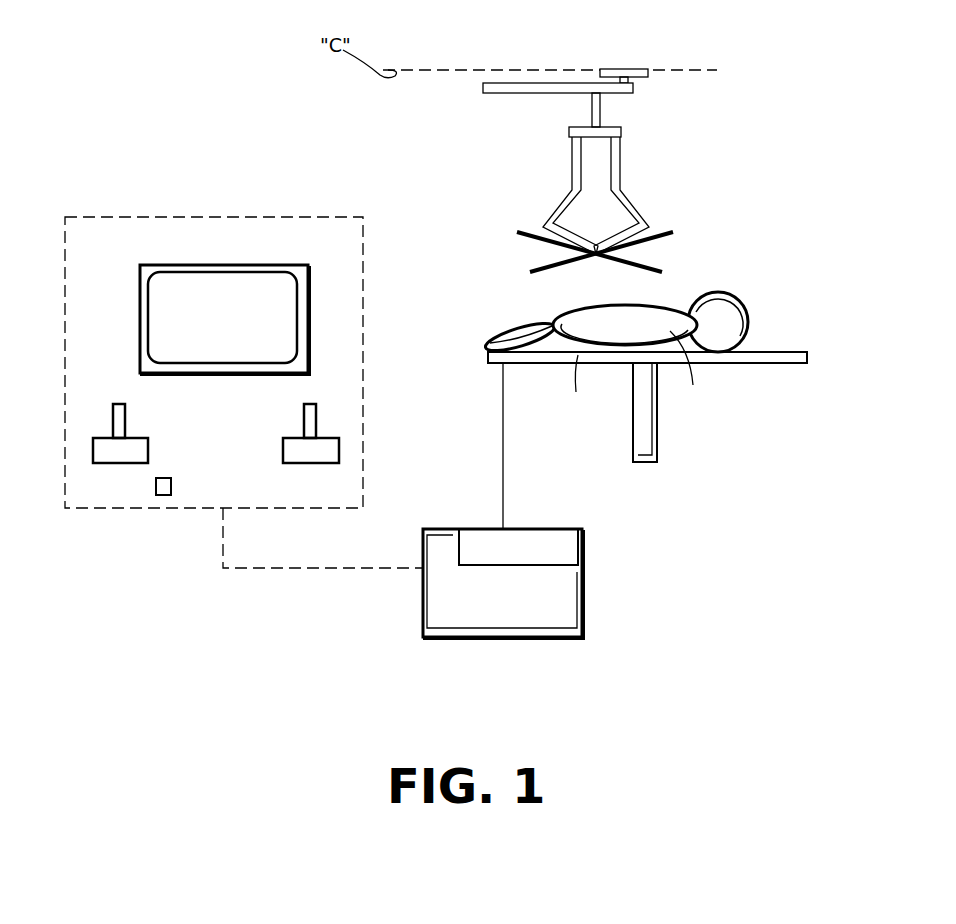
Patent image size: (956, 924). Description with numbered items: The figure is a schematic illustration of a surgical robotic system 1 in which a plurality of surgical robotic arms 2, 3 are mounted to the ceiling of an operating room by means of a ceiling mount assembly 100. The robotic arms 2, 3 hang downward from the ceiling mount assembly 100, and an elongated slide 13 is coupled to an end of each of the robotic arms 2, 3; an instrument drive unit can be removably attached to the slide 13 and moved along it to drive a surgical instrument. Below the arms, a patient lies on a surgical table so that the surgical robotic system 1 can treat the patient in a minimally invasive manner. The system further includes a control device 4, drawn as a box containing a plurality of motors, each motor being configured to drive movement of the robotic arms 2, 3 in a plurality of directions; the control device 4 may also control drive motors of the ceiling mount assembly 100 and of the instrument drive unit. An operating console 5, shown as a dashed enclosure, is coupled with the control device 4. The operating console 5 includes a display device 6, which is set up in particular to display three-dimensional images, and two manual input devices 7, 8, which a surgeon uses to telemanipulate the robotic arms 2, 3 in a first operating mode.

The surgical robotic system 1 is at (713, 560).
The ceiling mount assembly 100 is at (652, 78).
The surgical robotic arm 2 is at (572, 160).
The surgical robotic arm 3 is at (620, 156).
The elongated slide 13 is at (522, 237).
The control device 4 is at (507, 604).
The operating console 5 is at (151, 182).
The display device 6 is at (234, 326).
The manual input device 7 is at (103, 455).
The manual input device 8 is at (310, 455).